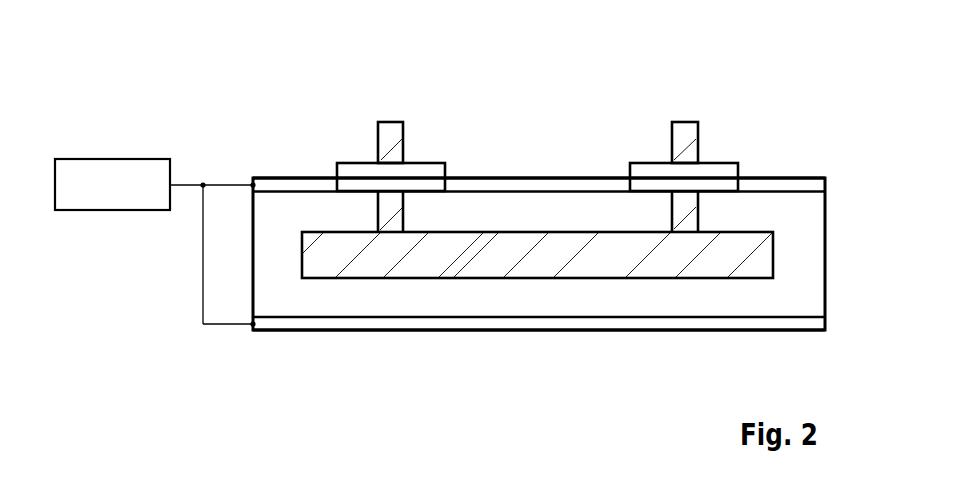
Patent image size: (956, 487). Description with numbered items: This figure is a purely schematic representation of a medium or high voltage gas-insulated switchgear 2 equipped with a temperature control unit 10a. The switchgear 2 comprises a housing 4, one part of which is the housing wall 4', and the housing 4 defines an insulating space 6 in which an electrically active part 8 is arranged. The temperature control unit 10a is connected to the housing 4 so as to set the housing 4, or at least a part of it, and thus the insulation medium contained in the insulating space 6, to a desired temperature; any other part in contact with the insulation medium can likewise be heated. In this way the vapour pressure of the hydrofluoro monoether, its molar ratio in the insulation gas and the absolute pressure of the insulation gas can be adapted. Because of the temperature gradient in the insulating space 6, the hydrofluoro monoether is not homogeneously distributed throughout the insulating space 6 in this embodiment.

The switchgear 2 is at (507, 116).
The housing 4 is at (539, 206).
The housing wall 4' is at (539, 372).
The insulating space 6 is at (505, 212).
The electrically active part 8 is at (429, 257).
The temperature control unit 10a is at (115, 158).